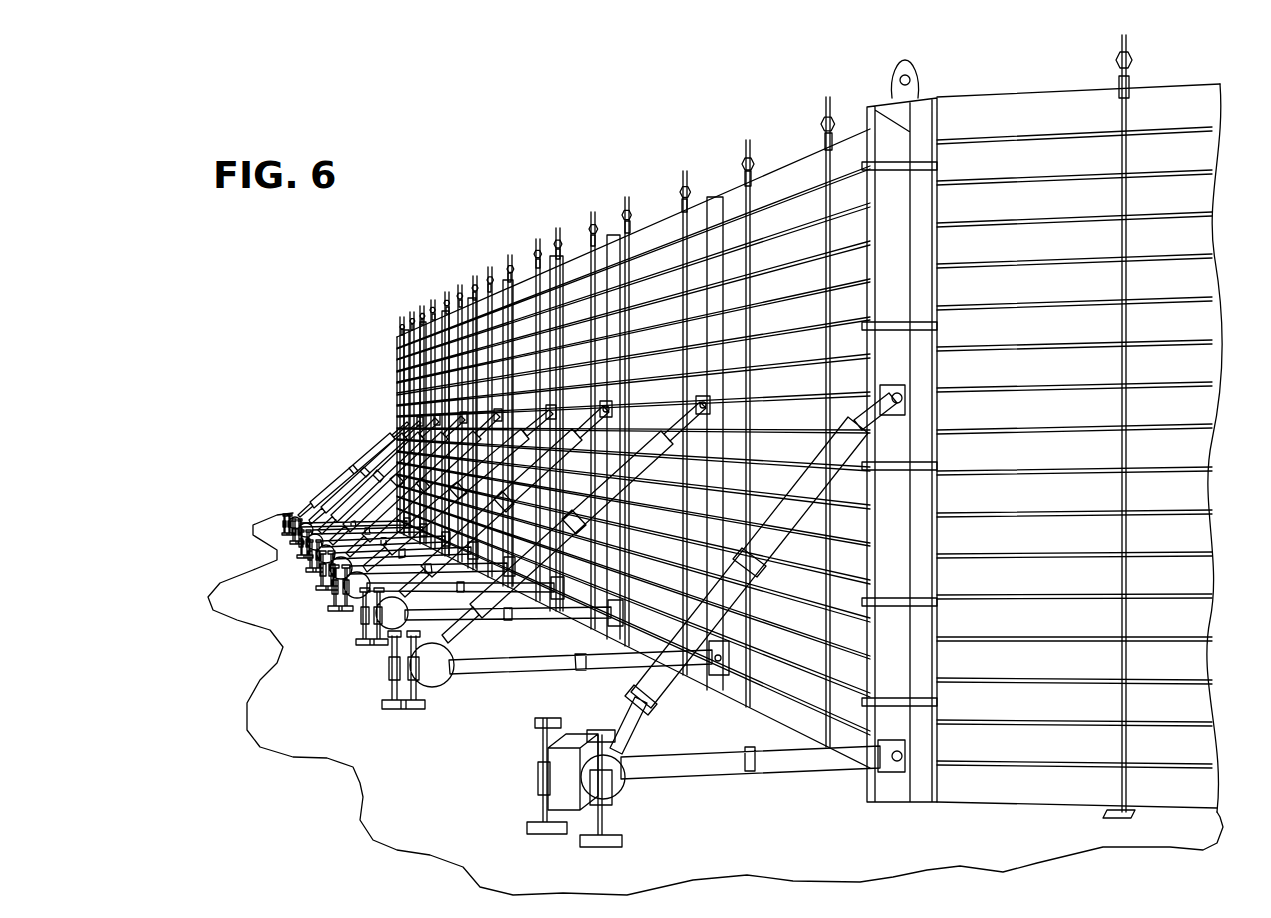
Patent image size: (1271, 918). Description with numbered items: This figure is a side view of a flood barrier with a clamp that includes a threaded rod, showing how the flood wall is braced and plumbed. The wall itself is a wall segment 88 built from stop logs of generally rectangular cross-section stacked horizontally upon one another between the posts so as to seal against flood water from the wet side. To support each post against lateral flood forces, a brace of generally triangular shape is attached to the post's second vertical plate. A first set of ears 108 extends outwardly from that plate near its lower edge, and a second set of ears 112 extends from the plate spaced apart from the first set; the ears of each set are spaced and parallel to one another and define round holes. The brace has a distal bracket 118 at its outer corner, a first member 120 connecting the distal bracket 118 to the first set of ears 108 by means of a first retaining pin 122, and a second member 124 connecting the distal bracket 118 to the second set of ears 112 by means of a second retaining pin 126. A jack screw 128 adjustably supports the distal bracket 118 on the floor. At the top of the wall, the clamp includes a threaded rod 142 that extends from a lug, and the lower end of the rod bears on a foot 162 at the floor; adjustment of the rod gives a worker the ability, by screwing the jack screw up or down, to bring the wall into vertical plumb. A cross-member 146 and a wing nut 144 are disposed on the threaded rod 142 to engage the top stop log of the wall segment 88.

The wall segment 88 is at (808, 320).
The first set of ears 108 is at (712, 400).
The second set of ears 112 is at (712, 672).
The distal bracket 118 is at (560, 770).
The first member 120 is at (778, 520).
The first retaining pin 122 is at (710, 412).
The second member 124 is at (548, 680).
The second retaining pin 126 is at (910, 756).
The jack screw 128 is at (576, 528).
The threaded rod 142 is at (1126, 160).
The wing nut 144 is at (742, 158).
The cross-member 146 is at (757, 163).
The foot plate 162 is at (1132, 810).